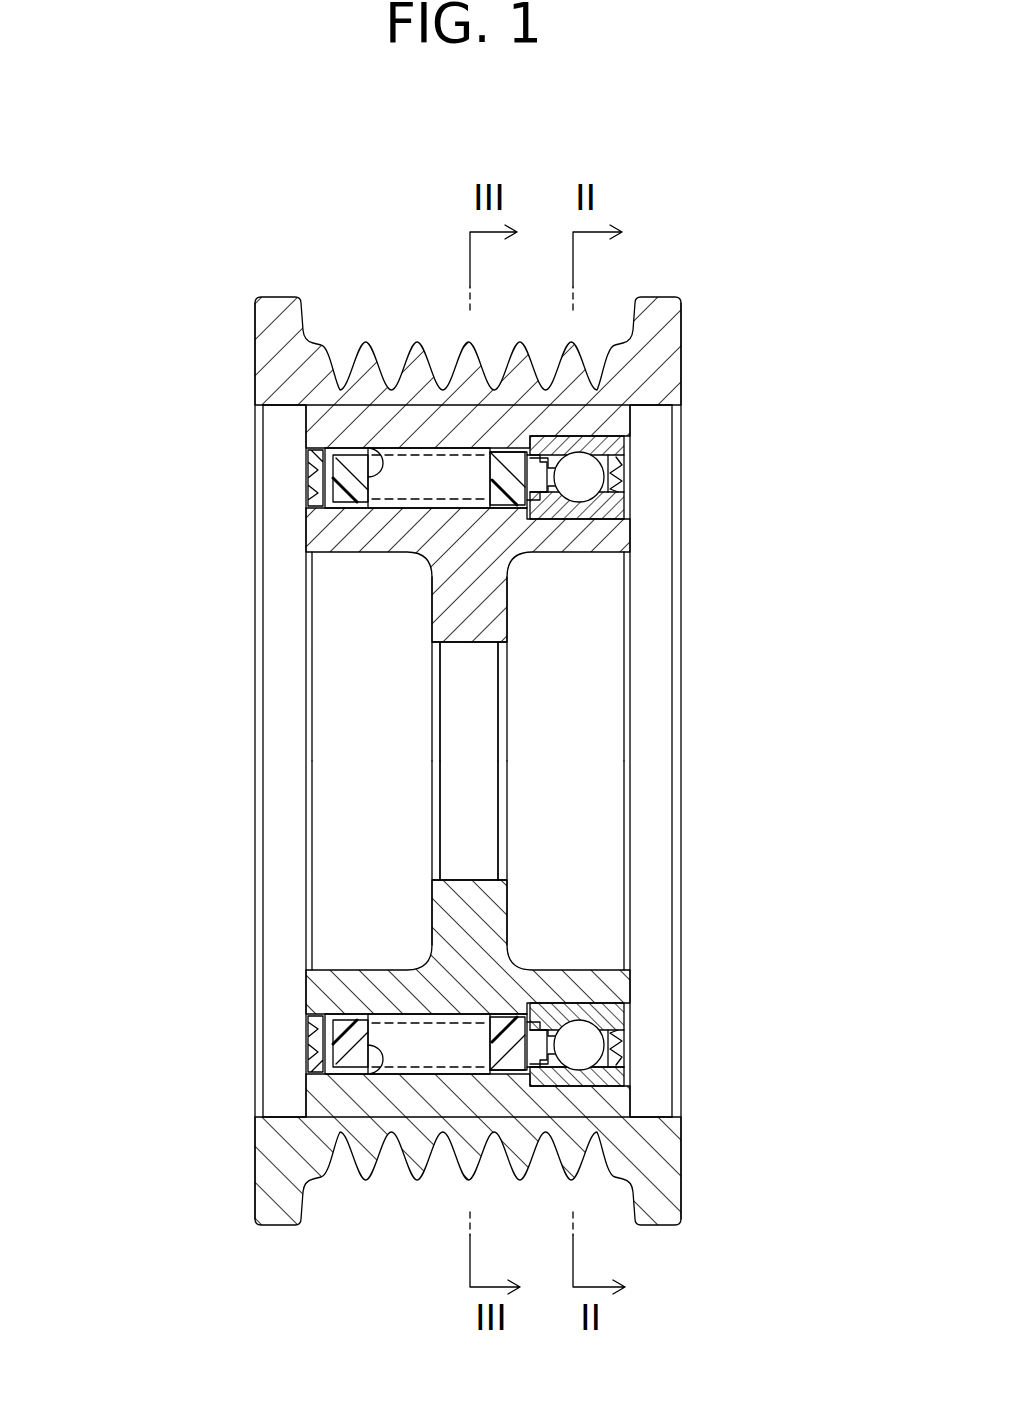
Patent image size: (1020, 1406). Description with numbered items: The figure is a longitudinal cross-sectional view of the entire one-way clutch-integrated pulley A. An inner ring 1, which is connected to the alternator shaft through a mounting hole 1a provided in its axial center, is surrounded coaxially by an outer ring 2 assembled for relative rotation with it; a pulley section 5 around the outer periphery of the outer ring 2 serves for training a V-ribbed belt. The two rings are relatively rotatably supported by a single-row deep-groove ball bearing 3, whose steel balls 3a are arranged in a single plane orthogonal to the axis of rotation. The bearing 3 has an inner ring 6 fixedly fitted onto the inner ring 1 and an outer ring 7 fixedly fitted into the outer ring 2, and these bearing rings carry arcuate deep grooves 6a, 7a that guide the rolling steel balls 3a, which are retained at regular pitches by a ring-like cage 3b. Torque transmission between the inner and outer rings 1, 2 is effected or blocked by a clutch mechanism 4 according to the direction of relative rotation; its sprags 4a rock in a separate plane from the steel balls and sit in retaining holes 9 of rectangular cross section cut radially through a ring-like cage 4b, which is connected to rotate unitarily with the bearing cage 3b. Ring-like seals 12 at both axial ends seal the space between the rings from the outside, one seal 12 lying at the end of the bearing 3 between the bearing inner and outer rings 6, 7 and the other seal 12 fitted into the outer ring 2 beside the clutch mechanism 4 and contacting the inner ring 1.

The one-way clutch-integrated pulley A is at (165, 172).
The inner ring 1 is at (340, 566).
The mounting hole 1a is at (488, 765).
The outer ring 2 is at (316, 392).
The single-row deep-groove ball bearing 3 is at (642, 737).
The steel balls 3a is at (578, 452).
The cage 3b is at (627, 486).
The clutch mechanism 4 is at (410, 437).
The sprags 4a is at (445, 450).
The cage 4b is at (507, 452).
The pulley section 5 is at (244, 363).
The inner ring 6 is at (652, 1062).
The deep groove 6a is at (580, 1018).
The outer ring 7 is at (612, 1091).
The deep groove 7a is at (590, 1082).
The retaining holes 9 is at (372, 452).
The seals 12 is at (308, 1072).